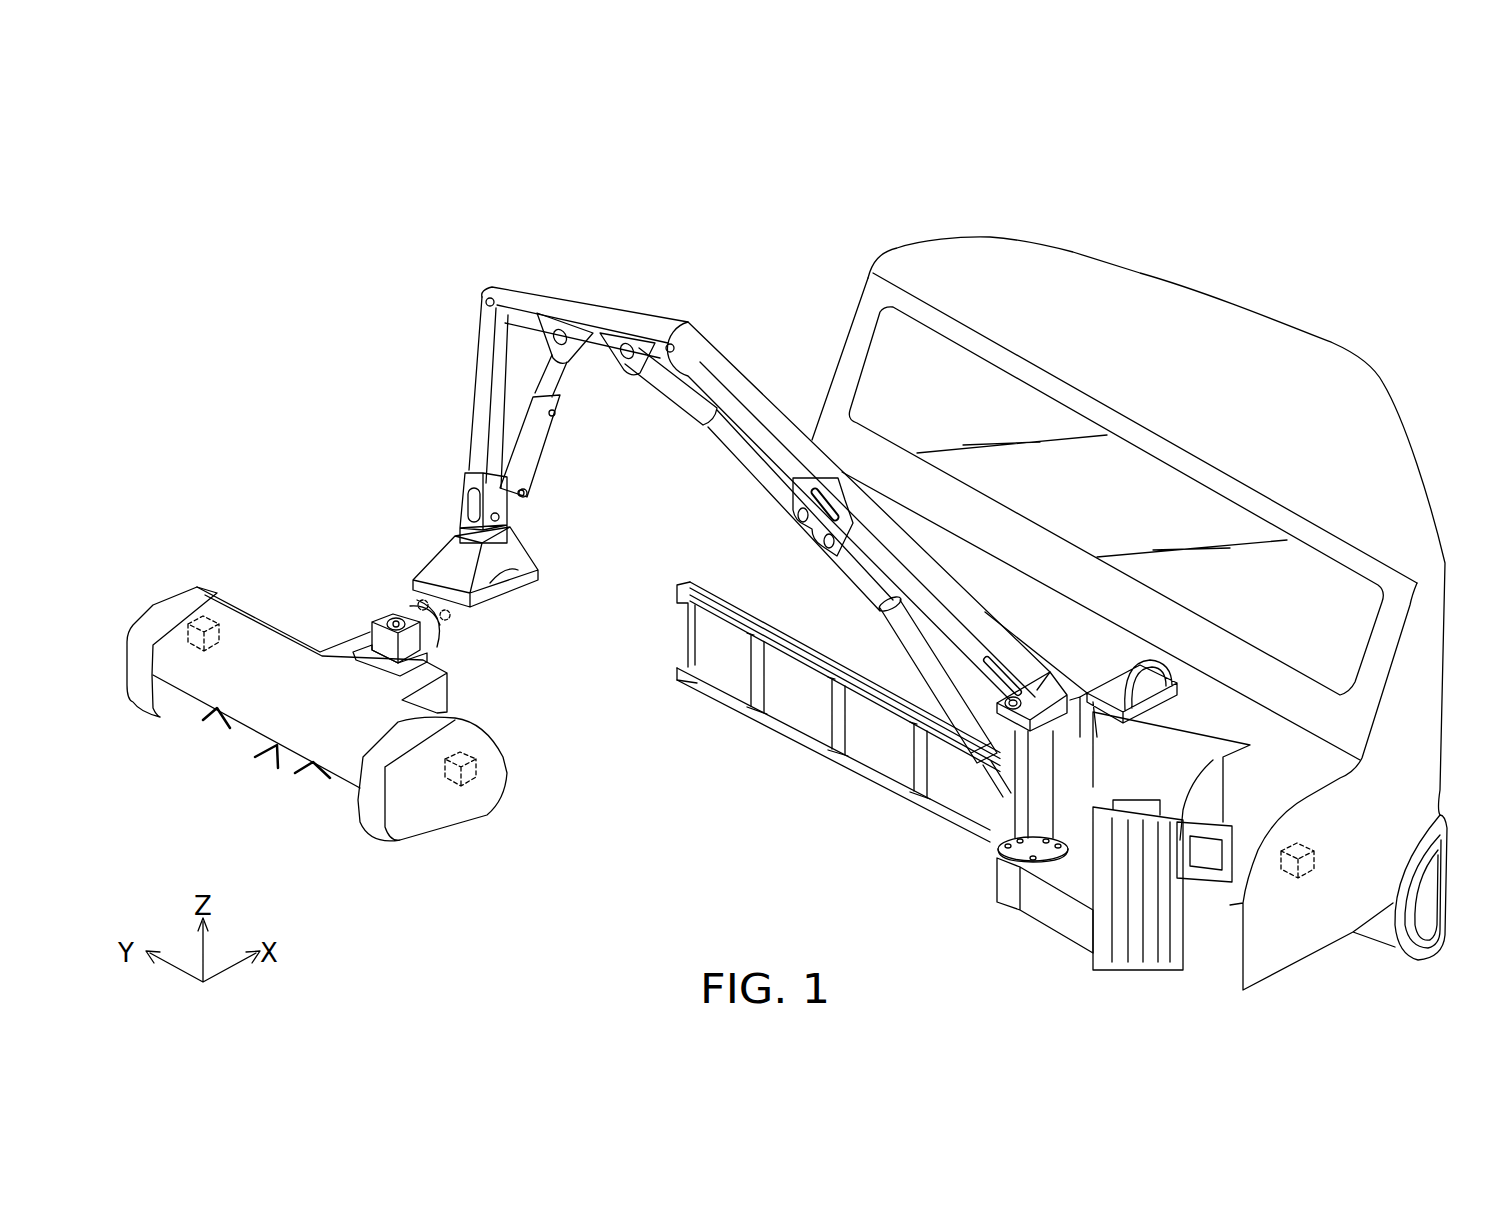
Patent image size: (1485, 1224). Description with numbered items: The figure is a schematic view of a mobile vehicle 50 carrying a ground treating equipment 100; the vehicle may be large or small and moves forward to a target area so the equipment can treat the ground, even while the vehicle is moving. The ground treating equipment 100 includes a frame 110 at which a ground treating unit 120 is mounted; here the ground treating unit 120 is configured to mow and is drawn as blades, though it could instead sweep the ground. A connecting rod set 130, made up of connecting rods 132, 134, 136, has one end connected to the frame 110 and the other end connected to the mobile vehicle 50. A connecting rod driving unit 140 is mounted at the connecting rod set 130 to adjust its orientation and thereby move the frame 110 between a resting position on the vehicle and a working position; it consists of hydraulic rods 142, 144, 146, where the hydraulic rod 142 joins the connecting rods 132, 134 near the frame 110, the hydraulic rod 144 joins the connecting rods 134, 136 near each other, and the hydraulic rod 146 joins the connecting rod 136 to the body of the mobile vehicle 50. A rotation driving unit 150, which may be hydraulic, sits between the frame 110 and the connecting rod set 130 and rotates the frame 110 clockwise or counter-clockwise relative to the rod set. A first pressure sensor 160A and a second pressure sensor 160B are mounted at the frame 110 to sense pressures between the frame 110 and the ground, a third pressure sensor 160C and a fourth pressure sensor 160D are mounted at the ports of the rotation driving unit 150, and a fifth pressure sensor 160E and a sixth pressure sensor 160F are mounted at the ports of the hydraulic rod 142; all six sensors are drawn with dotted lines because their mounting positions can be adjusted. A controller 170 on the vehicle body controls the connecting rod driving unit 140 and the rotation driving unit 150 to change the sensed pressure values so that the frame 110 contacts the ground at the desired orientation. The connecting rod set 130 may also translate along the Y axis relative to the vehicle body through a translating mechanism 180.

The mobile vehicle 50 is at (603, 963).
The ground treating equipment 100 is at (561, 700).
The frame 110 is at (403, 820).
The ground treating unit 120 is at (267, 762).
The connecting rod set 130 is at (605, 204).
The connecting rod 132 is at (483, 358).
The connecting rod 134 is at (532, 290).
The connecting rod 136 is at (765, 413).
The connecting rod driving unit 140 is at (697, 528).
The hydraulic rod 142 is at (553, 380).
The hydraulic rod 144 is at (683, 397).
The hydraulic rod 146 is at (860, 575).
The rotation driving unit 150 is at (490, 613).
The first pressure sensor 160A is at (473, 782).
The second pressure sensor 160B is at (197, 632).
The third pressure sensor 160C is at (450, 622).
The fourth pressure sensor 160D is at (420, 602).
The fifth pressure sensor 160E is at (520, 492).
The sixth pressure sensor 160F is at (550, 413).
The controller 170 is at (1303, 878).
The translating mechanism 180 is at (1130, 913).